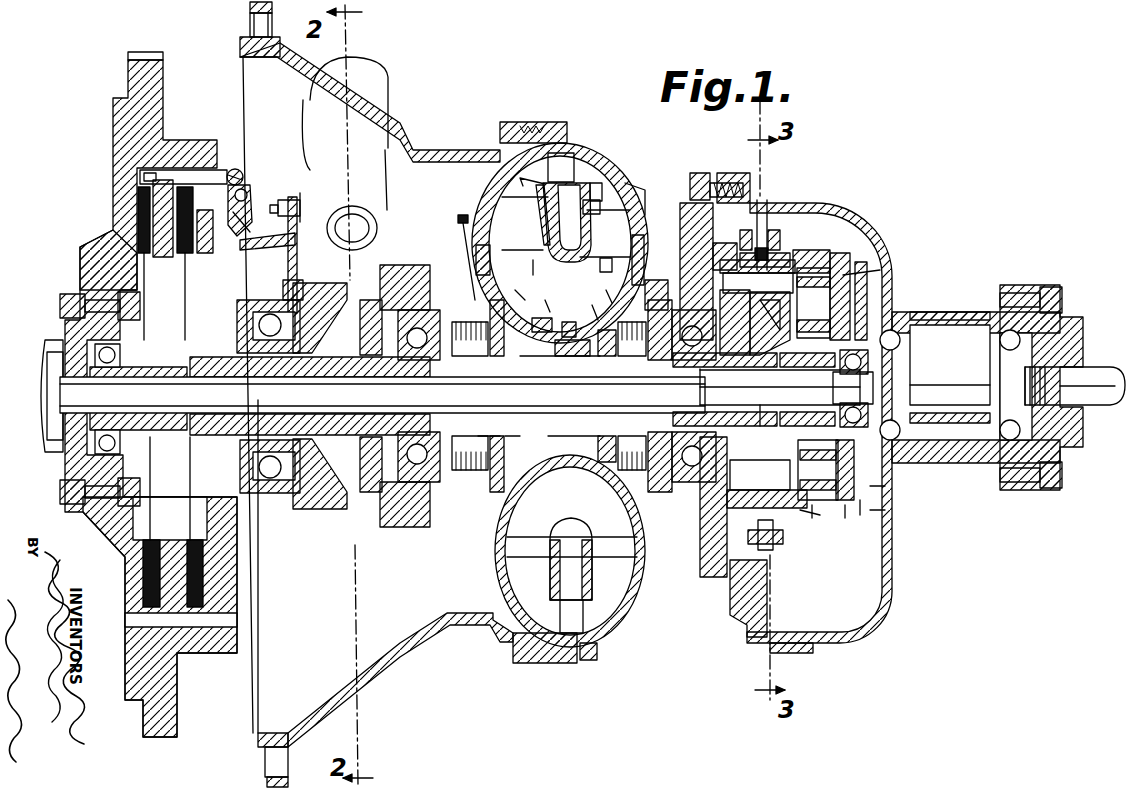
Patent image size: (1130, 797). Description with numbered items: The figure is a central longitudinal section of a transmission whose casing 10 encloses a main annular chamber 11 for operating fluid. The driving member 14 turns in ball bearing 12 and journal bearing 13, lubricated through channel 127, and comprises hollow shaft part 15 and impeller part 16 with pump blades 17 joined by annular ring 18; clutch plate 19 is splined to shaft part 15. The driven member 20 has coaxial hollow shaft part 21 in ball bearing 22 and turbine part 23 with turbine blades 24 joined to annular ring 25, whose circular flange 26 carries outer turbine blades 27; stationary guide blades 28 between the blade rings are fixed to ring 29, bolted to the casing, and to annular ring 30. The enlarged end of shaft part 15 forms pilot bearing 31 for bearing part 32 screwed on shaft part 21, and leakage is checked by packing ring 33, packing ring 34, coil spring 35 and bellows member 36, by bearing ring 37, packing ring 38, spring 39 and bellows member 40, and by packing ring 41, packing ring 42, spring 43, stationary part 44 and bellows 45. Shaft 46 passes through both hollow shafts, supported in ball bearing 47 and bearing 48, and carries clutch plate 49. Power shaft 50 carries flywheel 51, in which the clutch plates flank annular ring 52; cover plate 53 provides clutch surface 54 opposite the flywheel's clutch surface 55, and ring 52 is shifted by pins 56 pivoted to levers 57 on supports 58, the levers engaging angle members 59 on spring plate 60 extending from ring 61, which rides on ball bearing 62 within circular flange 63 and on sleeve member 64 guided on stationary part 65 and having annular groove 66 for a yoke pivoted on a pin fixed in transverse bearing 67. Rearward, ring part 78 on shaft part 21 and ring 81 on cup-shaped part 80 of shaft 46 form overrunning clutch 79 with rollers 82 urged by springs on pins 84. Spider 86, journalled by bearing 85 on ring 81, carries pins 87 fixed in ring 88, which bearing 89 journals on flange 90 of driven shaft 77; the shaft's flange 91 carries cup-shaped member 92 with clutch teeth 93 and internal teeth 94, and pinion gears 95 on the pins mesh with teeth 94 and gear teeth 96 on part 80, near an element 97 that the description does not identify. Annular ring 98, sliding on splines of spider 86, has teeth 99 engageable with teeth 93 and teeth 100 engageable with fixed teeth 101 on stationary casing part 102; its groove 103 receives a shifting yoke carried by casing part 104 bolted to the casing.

The casing 10 is at (420, 150).
The main annular chamber 11 is at (569, 377).
The ball bearing 12 is at (400, 378).
The journal bearing 13 is at (541, 316).
The primary or driving member 14 is at (522, 288).
The hollow shaft part 15 is at (332, 435).
The impeller part 16 is at (492, 262).
The impeller or pump blades 17 is at (541, 264).
The annular ring 18 is at (542, 210).
The clutch plate 19 is at (186, 298).
The secondary or driven member 20 is at (592, 309).
The hollow shaft part 21 is at (705, 367).
The ball bearing 22 is at (770, 389).
The impelled or turbine part 23 is at (635, 276).
The turbine blades 24 is at (602, 262).
The annular ring 25 is at (566, 262).
The axially extending circular flange 26 is at (545, 186).
The turbine blades 27 is at (575, 168).
The stationary guide blades 28 is at (598, 188).
The ring 29 is at (637, 192).
The annular ring 30 is at (600, 212).
The internal pilot bearing 31 is at (570, 323).
The bearing part 32 is at (575, 356).
The packing ring 33 is at (490, 436).
The packing ring 34 is at (509, 413).
The coil spring 35 is at (570, 413).
The expansible bellows member 36 is at (560, 377).
The bearing ring 37 is at (425, 362).
The stationary packing ring 38 is at (470, 358).
The spring 39 is at (538, 299).
The expansible bellows member 40 is at (497, 358).
The packing ring 41 is at (690, 360).
The packing ring 42 is at (633, 356).
The spring 43 is at (607, 293).
The stationary part 44 is at (656, 280).
The expansible bellows 45 is at (612, 356).
The shaft 46 is at (335, 394).
The ball bearing 47 is at (95, 447).
The bearing 48 is at (853, 388).
The clutch plate 49 is at (150, 280).
The shaft 50 is at (38, 371).
The flywheel 51 is at (118, 148).
The annular ring 52 is at (160, 550).
The annular cover plate 53 is at (215, 542).
The clutch surface 54 is at (200, 243).
The clutch surface 55 is at (118, 210).
The pins 56 is at (213, 168).
The levers 57 is at (252, 200).
The supports 58 is at (232, 212).
The angle members 59 is at (270, 246).
The annular spring plate 60 is at (298, 258).
The ring 61 is at (286, 292).
The ball bearing 62 is at (255, 323).
The circular flange 63 is at (232, 497).
The sleeve member 64 is at (312, 336).
The stationary part 65 is at (362, 322).
The external annular groove 66 is at (378, 290).
The bearing 67 is at (388, 180).
The driven shaft 77 is at (937, 368).
The ring part 78 is at (770, 368).
The overrunning clutch 79 is at (758, 318).
The cup-shaped part 80 is at (800, 367).
The ring 81 is at (757, 283).
The rollers 82 is at (740, 355).
The pins 84 is at (744, 407).
The bearing 85 is at (767, 484).
The annular spider 86 is at (815, 520).
The pins 87 is at (832, 296).
The ring 88 is at (866, 268).
The bearing 89 is at (826, 470).
The axially extending circular flange 90 is at (840, 366).
The radially extending flange 91 is at (884, 487).
The cup-shaped member 92 is at (884, 511).
The clutch teeth 93 is at (795, 252).
The teeth 94 is at (845, 520).
The pinion gear 95 is at (858, 512).
The gear teeth 96 is at (807, 407).
The pin 97 is at (790, 520).
The annular ring 98 is at (752, 528).
The teeth 99 is at (770, 256).
The teeth 100 is at (760, 232).
The fixed axially extending teeth 101 is at (723, 243).
The stationary casing part 102 is at (700, 518).
The external groove 103 is at (768, 548).
The casing part 104 is at (818, 204).
The channel 127 is at (463, 215).